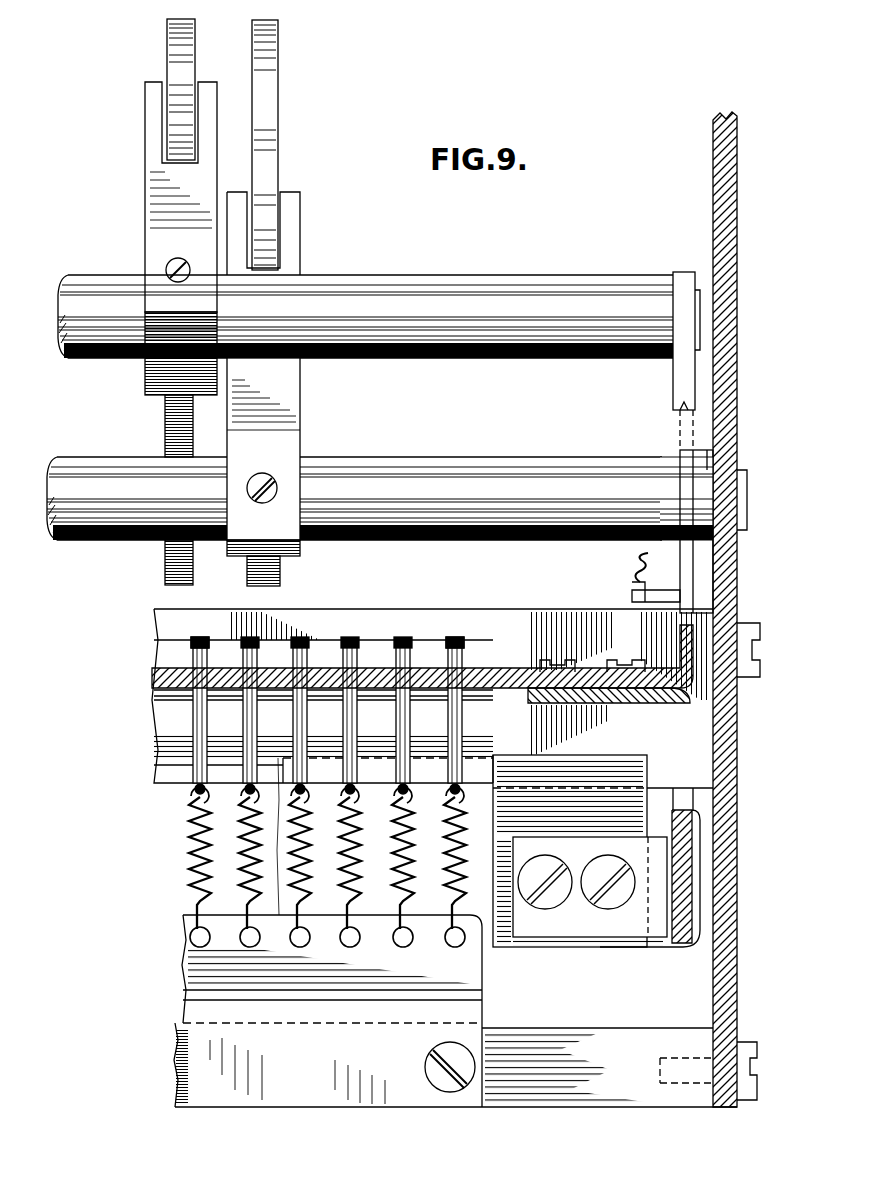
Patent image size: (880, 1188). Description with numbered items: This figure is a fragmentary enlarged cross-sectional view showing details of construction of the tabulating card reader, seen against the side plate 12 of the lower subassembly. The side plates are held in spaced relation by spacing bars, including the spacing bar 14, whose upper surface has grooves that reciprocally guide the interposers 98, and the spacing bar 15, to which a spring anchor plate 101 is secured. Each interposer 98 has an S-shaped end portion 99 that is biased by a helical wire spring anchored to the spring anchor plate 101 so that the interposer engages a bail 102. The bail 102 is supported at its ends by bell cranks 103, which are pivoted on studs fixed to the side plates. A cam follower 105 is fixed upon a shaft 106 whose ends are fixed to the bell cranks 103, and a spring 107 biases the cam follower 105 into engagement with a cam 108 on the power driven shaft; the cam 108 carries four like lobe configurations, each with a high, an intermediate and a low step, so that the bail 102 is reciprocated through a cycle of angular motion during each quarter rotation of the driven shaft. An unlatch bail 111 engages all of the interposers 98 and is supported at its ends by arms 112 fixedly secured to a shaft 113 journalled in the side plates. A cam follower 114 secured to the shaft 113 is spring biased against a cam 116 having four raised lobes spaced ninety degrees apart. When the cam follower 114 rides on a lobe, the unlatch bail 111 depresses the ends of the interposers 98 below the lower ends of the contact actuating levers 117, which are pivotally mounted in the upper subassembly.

The side plate 12 is at (727, 985).
The spacing bar 14 is at (395, 609).
The spacing bar 15 is at (527, 1108).
The interposer 98 is at (293, 734).
The S-shaped end portion 99 is at (348, 772).
The spring anchor plate 101 is at (485, 983).
The bail 102 is at (540, 757).
The bell crank 103 is at (675, 384).
The cam follower 105 is at (146, 178).
The shaft 106 is at (513, 290).
The spring 107 is at (245, 858).
The cam 108 is at (168, 47).
The unlatch bail 111 is at (512, 680).
The arm 112 is at (690, 568).
The shaft 113 is at (500, 480).
The cam follower 114 is at (285, 378).
The cam 116 is at (268, 47).
The contact actuating lever 117 is at (350, 636).